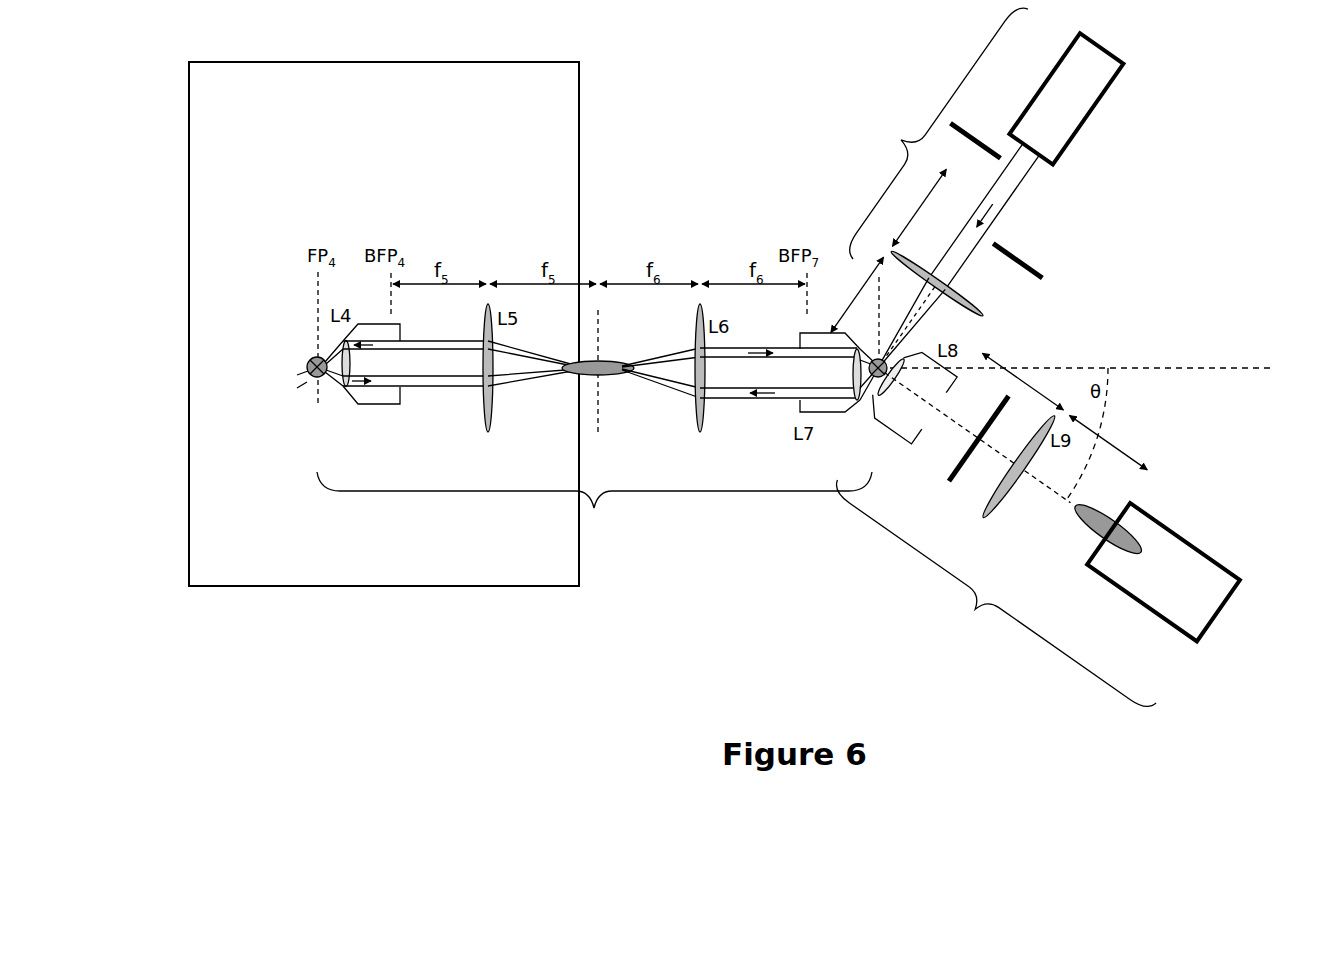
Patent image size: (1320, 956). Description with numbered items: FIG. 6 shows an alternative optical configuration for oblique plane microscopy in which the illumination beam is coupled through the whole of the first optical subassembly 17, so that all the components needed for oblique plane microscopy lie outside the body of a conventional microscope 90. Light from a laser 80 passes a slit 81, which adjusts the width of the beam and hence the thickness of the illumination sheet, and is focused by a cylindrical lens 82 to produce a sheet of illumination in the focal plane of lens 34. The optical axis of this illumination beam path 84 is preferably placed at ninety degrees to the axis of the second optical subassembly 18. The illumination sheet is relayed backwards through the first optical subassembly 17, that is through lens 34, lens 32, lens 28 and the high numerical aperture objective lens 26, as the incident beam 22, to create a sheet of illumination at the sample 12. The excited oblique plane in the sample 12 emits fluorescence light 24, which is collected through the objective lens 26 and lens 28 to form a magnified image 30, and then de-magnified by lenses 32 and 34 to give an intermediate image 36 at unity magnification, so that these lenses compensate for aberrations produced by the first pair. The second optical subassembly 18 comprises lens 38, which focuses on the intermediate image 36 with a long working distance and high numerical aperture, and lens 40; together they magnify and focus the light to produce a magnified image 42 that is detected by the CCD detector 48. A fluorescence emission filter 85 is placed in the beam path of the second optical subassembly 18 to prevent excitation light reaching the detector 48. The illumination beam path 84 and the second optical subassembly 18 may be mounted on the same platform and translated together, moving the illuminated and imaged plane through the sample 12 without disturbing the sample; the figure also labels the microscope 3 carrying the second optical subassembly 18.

The microscope 3 is at (978, 618).
The sample 12 is at (309, 388).
The first optical subassembly 17 is at (594, 504).
The second optical subassembly 18 is at (978, 618).
The incident beam of light 22 is at (371, 333).
The fluorescence light 24 is at (371, 395).
The objective lens 26 is at (328, 394).
The lens 28 is at (501, 368).
The magnified image 30 is at (598, 382).
The lens 32 is at (713, 372).
The lens 34 is at (830, 388).
The intermediate image 36 is at (871, 391).
The lens 38 is at (976, 439).
The lens 40 is at (1035, 453).
The magnified image 42 is at (1102, 529).
The detector 48 is at (1163, 572).
The laser 80 is at (1019, 165).
The slit 81 is at (1011, 179).
The cylindrical lens 82 is at (934, 283).
The illumination beam path 84 is at (915, 129).
The fluorescence emission filter 85 is at (956, 451).
The conventional microscope 90 is at (384, 324).